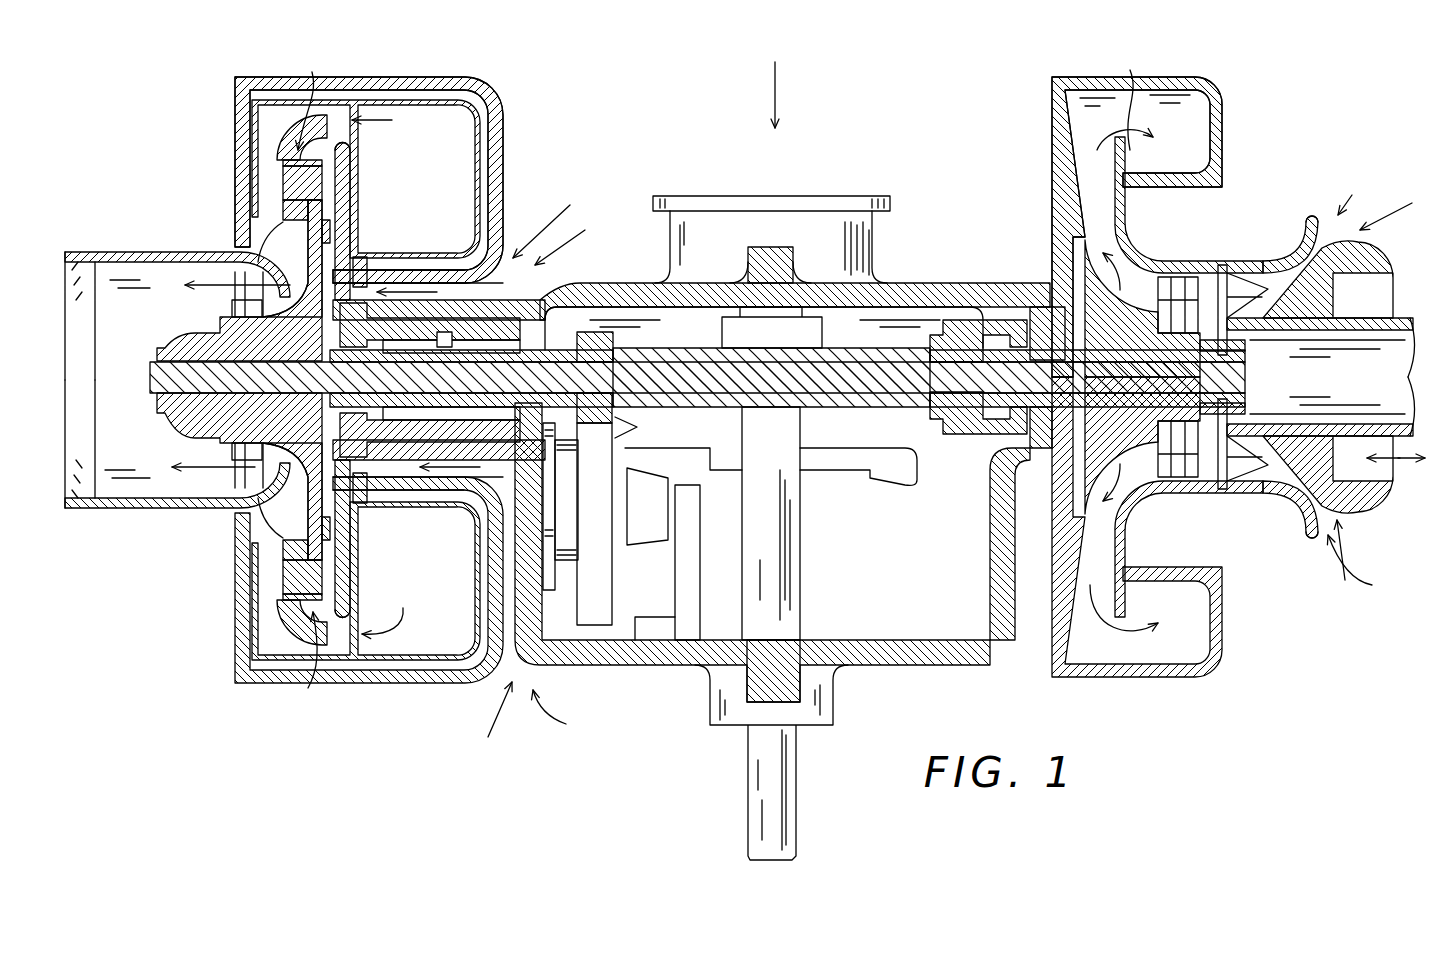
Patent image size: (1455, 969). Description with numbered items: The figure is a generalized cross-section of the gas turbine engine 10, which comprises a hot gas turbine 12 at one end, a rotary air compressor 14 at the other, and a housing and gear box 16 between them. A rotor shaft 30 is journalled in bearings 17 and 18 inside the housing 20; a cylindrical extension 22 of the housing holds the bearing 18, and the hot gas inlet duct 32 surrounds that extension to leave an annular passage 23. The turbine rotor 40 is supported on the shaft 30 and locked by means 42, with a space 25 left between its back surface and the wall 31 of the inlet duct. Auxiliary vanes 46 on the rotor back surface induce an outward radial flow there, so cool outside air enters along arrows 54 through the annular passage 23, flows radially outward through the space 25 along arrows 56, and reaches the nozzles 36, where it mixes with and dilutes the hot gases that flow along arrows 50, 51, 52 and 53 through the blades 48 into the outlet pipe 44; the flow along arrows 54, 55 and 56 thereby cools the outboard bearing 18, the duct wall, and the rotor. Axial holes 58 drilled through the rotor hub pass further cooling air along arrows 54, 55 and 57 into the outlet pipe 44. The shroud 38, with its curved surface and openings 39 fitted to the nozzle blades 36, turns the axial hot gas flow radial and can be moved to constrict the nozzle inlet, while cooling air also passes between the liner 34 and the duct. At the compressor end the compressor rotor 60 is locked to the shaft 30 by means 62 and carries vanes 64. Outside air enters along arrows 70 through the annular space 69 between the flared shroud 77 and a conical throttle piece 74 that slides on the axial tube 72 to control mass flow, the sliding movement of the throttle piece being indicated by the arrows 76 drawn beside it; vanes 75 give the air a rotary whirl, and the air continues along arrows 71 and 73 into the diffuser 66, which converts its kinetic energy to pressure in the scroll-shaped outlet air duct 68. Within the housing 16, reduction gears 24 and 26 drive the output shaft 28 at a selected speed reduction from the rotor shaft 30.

The turbine engine 10 is at (775, 79).
The hot gas turbine 12 is at (535, 118).
The rotary air compressor 14 is at (1030, 135).
The housing and gear box 16 is at (935, 272).
The bearing 17 is at (935, 328).
The bearing 18 is at (456, 338).
The housing 20 is at (614, 283).
The cylindrical extension of the housing 22 is at (362, 272).
The annular passage 23 is at (457, 287).
The reduction gear 24 is at (605, 509).
The space 25 is at (338, 350).
The reduction gear 26 is at (680, 448).
The output shaft 28 is at (798, 761).
The rotor shaft 30 is at (864, 408).
The wall of the hot gas inlet duct 31 is at (353, 170).
The hot gas inlet duct 32 is at (485, 80).
The liner 34 is at (414, 108).
The turbine nozzles 36 is at (290, 180).
The shroud 38 is at (278, 134).
The openings 39 is at (285, 161).
The turbine rotor 40 is at (180, 426).
The locking means 42 is at (178, 343).
The outlet pipe 44 is at (135, 250).
The auxiliary vanes 46 is at (332, 232).
The turbine blades 48 is at (272, 265).
The hot gas flow arrows 50 is at (378, 118).
The hot gas flow arrows 51 is at (300, 378).
The hot gas flow arrows 52 is at (290, 212).
The hot gas flow arrows 53 is at (165, 508).
The cooling air flow arrows 54 is at (543, 460).
The cooling air flow arrows 55 is at (437, 291).
The cooling air flow arrows 56 is at (330, 191).
The cooling air flow arrows 57 is at (292, 380).
The axial holes 58 is at (222, 318).
The compressor rotor 60 is at (1205, 413).
The locking means 62 is at (1232, 353).
The compressor vanes 64 is at (1147, 275).
The diffuser 66 is at (1128, 198).
The outlet air duct 68 is at (1203, 83).
The annular space 69 is at (1282, 266).
The inlet air flow arrows 70 is at (1352, 195).
The air flow arrows 71 is at (1125, 285).
The axial tube 72 is at (1373, 331).
The air flow arrows 73 is at (1185, 642).
The conical throttle piece 74 is at (1334, 299).
The inlet vanes 75 is at (1243, 274).
The flow arrow 76 is at (1405, 460).
The flared shroud 77 is at (1306, 216).